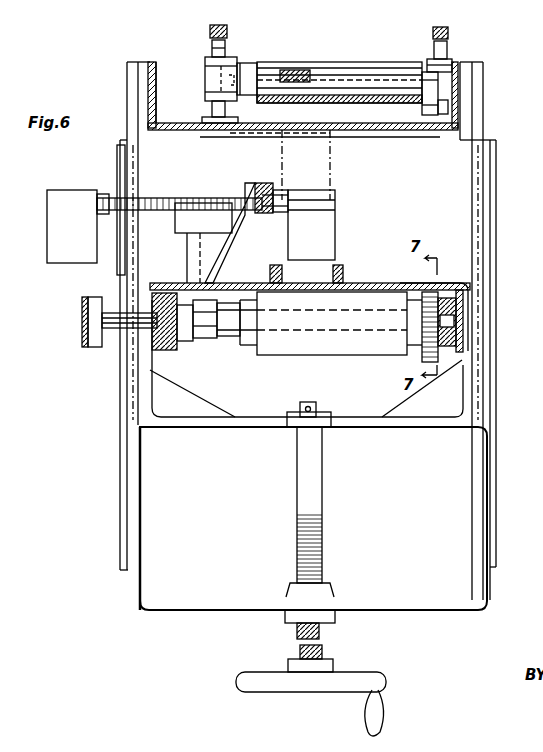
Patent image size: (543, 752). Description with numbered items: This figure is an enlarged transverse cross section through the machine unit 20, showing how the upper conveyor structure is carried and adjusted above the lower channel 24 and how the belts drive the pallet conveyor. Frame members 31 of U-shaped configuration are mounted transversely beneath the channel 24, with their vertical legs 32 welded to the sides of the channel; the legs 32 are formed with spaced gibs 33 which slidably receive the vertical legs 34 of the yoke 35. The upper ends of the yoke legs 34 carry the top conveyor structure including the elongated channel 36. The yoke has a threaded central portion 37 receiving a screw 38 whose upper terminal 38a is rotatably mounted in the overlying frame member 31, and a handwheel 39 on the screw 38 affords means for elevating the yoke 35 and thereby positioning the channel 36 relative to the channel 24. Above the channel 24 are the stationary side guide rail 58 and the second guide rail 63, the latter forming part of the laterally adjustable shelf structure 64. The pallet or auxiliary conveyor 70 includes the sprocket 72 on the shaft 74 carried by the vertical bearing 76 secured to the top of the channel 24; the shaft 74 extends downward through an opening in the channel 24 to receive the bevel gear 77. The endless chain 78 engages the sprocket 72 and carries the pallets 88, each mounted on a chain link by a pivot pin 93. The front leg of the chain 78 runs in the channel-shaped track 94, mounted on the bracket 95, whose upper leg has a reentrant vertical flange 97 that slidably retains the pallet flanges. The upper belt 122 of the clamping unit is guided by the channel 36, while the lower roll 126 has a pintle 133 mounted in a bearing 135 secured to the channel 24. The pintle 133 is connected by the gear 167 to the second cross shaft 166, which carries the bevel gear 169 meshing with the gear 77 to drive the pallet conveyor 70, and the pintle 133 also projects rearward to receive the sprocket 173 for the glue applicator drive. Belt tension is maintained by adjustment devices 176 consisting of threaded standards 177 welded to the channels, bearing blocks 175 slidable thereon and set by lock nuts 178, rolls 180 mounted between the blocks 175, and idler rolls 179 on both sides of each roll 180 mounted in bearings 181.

The unit 20 is at (506, 123).
The channel 24 is at (462, 350).
The frame members 31 is at (440, 428).
The vertical legs 32 is at (478, 402).
The gibs 33 is at (120, 420).
The vertical legs 34 is at (493, 530).
The yoke 35 is at (442, 610).
The channel 36 is at (458, 90).
The threaded central portions 37 is at (335, 618).
The screws 38 is at (320, 538).
The upper terminals 38a is at (316, 406).
The handwheel 39 is at (342, 692).
The side guide rail 58 is at (278, 268).
The second guide rail 63 is at (342, 270).
The adjustable shelf structure 64 is at (486, 290).
The pallet or auxiliary conveyor 70 is at (60, 263).
The sprocket 72 is at (195, 212).
The shaft 74 is at (186, 250).
The vertical bearing 76 is at (186, 268).
The bevel gear 77 is at (178, 342).
The endless chain 78 is at (142, 206).
The pallets 88 is at (68, 190).
The pivot pin 93 is at (119, 185).
The track 94 is at (282, 194).
The bracket 95 is at (245, 195).
The reentrant vertical flange 97 is at (272, 186).
The belt 122 is at (352, 100).
The lower roll 126 is at (262, 350).
The pintle 133 is at (110, 330).
The bearing 135 is at (152, 300).
The second cross shaft 166 is at (248, 358).
The gear 167 is at (425, 335).
The bevel gear 169 is at (195, 340).
The sprocket 173 is at (85, 340).
The bearing blocks 175 is at (205, 84).
The adjustment devices 176 is at (467, 21).
The standards 177 is at (205, 125).
The lock nuts 178 is at (238, 62).
The idler rolls 179 is at (380, 75).
The rolls 180 is at (250, 62).
The bearings 181 is at (425, 116).